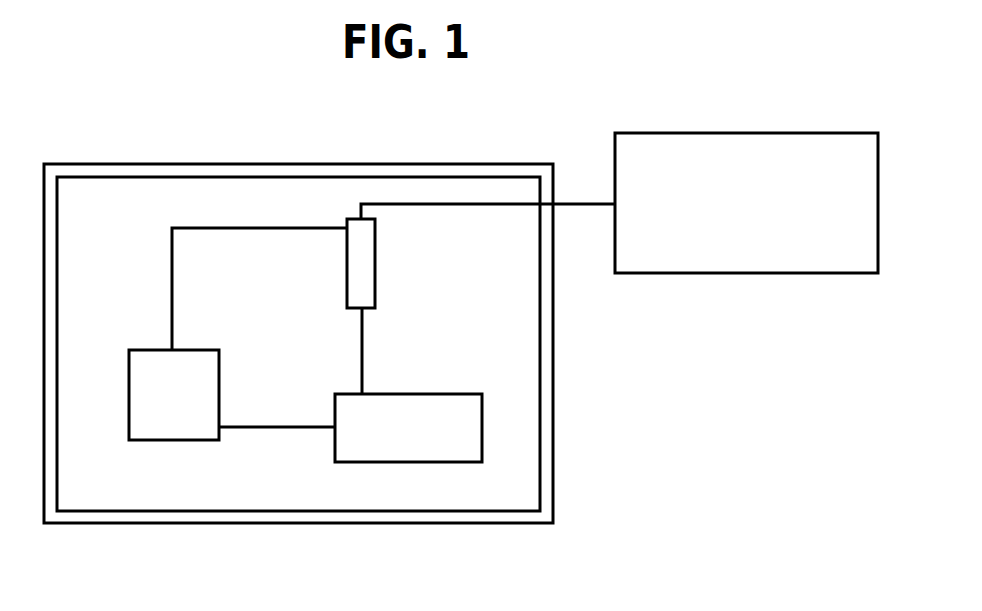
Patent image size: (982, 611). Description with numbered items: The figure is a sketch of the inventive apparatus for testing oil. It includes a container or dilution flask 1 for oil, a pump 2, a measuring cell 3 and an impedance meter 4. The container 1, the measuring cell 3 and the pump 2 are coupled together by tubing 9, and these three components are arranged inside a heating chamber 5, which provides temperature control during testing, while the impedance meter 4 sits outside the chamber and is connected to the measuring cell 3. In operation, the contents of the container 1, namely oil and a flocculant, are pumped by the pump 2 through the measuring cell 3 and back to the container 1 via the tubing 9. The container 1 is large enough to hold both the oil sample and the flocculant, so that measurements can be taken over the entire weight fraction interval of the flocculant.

The dilution flask 1 is at (166, 413).
The pump 2 is at (402, 441).
The measuring cell 3 is at (352, 277).
The impedance meter 4 is at (738, 218).
The heating chamber 5 is at (510, 520).
The tubing 9 is at (172, 263).